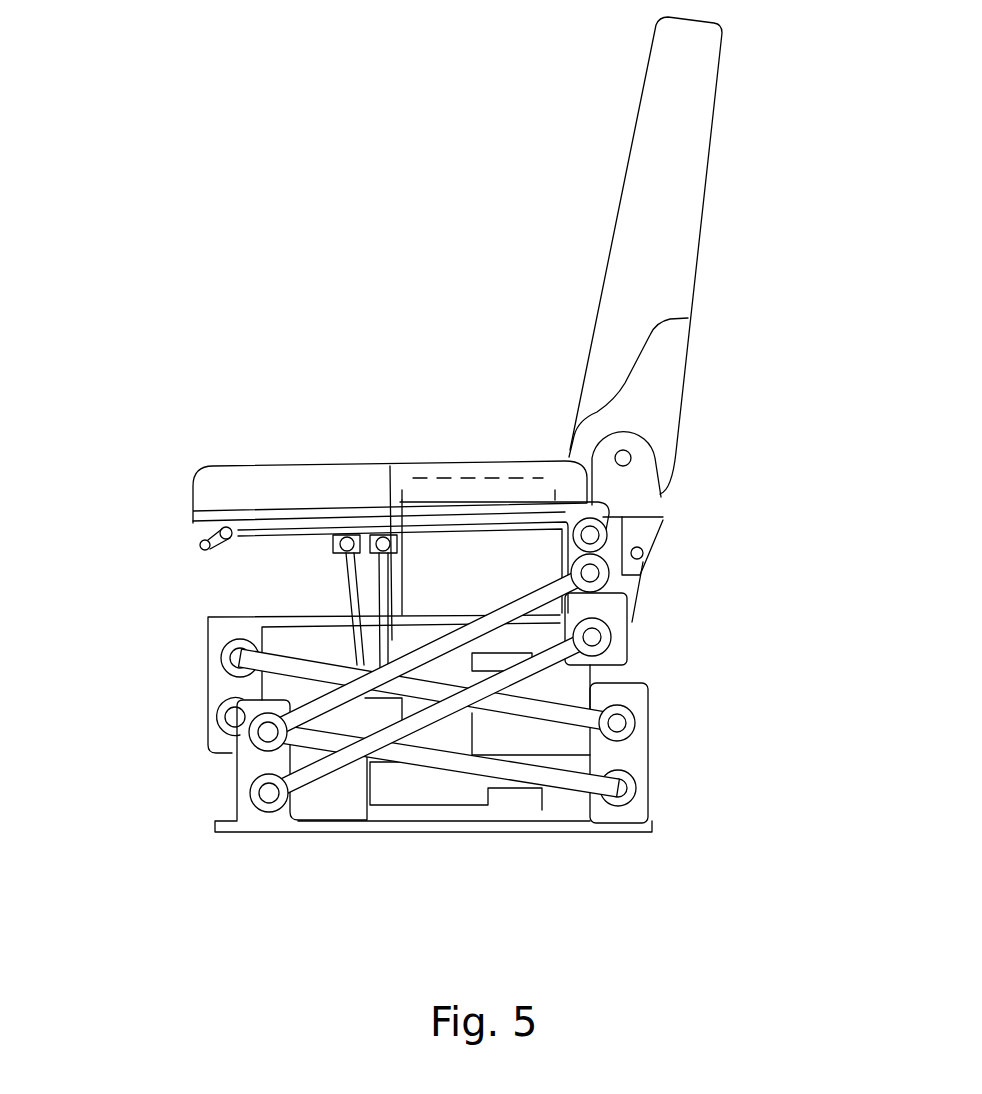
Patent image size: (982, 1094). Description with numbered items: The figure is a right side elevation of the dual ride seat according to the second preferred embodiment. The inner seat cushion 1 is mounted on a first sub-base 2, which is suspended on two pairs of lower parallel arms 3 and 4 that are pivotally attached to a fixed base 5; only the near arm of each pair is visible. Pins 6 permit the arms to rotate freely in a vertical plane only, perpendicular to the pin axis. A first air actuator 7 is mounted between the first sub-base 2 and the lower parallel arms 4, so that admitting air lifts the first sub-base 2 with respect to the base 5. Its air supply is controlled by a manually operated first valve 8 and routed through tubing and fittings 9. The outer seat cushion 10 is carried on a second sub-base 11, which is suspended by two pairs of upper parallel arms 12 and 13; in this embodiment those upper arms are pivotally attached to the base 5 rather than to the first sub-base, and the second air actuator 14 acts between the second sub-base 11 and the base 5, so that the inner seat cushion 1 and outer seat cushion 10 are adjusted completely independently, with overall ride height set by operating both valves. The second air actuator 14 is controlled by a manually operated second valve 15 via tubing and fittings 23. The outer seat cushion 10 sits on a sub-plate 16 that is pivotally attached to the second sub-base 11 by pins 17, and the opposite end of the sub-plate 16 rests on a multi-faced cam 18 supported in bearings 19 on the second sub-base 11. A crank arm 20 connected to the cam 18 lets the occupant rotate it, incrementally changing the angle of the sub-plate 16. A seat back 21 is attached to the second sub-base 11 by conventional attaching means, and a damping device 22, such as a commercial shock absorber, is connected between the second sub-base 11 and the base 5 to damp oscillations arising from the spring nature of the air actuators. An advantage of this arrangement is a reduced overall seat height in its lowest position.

The inner seat cushion 1 is at (477, 473).
The first sub-base 2 is at (203, 637).
The lower parallel arms 3 is at (530, 731).
The lower parallel arms 4 is at (453, 780).
The fixed base 5 is at (205, 827).
The pins 6 is at (634, 789).
The first air actuator 7 is at (637, 611).
The first valve 8 is at (383, 530).
The tubing and fittings 9 is at (377, 583).
The outer seat cushion 10 is at (283, 466).
The second sub-base 11 is at (635, 620).
The upper parallel arms 12 is at (338, 780).
The upper parallel arms 13 is at (523, 587).
The second air actuator 14 is at (555, 744).
The second valve 15 is at (347, 530).
The sub-plate 16 is at (263, 500).
The pins 17 is at (600, 517).
The multi-faced cam 18 is at (207, 525).
The bearings 19 is at (240, 517).
The crank arm 20 is at (193, 543).
The seat back 21 is at (707, 175).
The damping device 22 is at (640, 573).
The tubing and fittings 23 is at (362, 802).